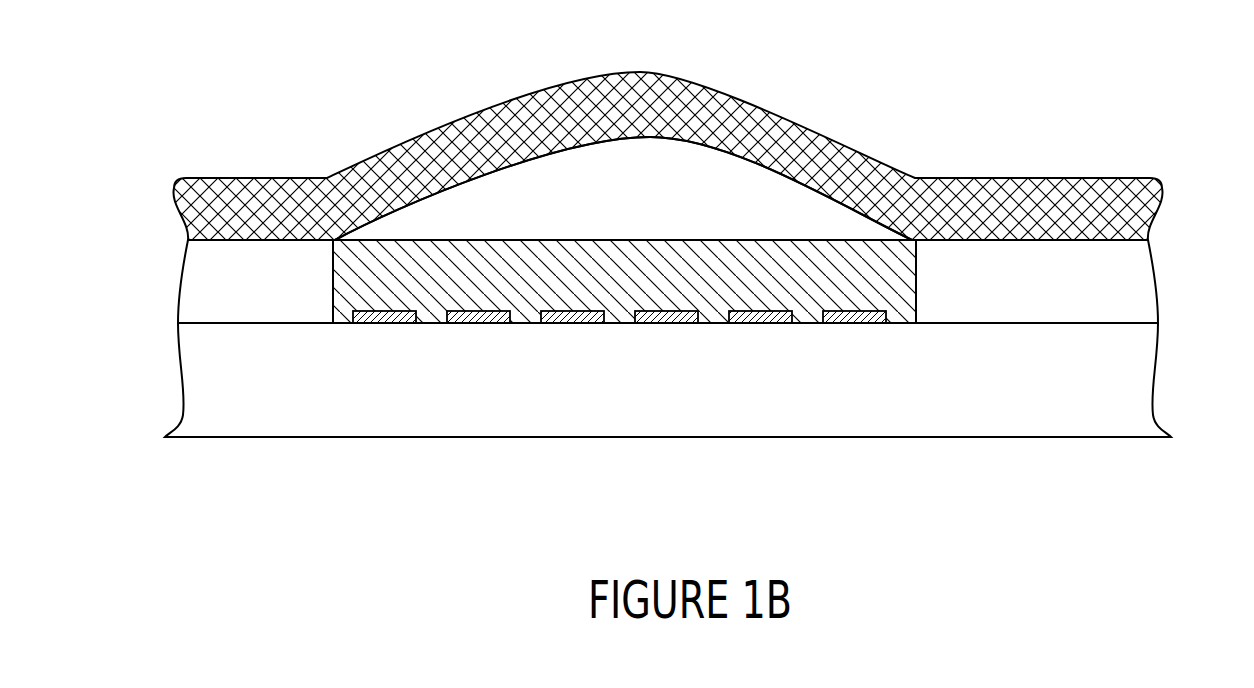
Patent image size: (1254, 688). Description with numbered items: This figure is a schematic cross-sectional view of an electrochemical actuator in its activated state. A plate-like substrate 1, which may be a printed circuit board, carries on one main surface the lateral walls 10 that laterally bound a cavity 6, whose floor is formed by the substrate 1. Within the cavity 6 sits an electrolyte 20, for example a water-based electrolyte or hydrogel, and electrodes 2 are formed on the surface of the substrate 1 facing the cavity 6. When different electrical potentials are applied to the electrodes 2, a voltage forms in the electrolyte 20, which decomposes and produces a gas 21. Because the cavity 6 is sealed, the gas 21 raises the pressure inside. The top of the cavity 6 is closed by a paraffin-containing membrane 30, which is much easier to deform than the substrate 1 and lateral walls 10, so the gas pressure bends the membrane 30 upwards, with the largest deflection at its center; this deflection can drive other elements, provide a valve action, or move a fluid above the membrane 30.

The substrate 1 is at (275, 390).
The electrodes 2 is at (555, 324).
The cavity 6 is at (905, 277).
The lateral walls 10 is at (232, 279).
The electrolyte 20 is at (525, 258).
The gas 21 is at (637, 162).
The membrane 30 is at (840, 163).